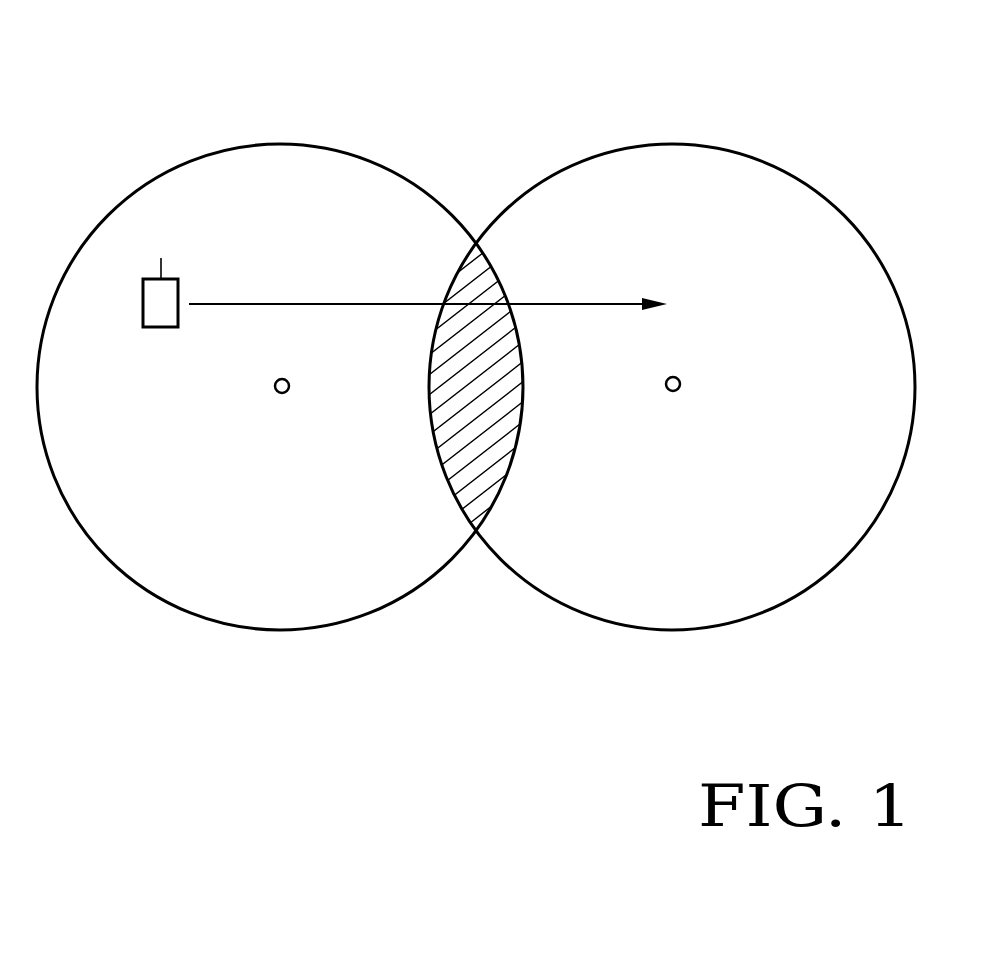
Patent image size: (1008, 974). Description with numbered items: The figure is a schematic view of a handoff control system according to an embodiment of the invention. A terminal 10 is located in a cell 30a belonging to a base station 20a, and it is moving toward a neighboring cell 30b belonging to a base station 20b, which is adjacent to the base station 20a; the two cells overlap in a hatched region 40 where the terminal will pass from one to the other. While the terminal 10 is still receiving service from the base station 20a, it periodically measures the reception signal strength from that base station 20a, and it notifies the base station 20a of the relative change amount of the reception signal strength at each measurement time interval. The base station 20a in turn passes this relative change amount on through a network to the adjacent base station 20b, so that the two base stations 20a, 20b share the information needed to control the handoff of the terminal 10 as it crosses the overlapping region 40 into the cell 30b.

The terminal 10 is at (159, 318).
The base station 20a is at (283, 394).
The base station 20b is at (673, 392).
The cell 30a is at (257, 152).
The cell 30b is at (690, 150).
The overlapping area 40 is at (485, 482).